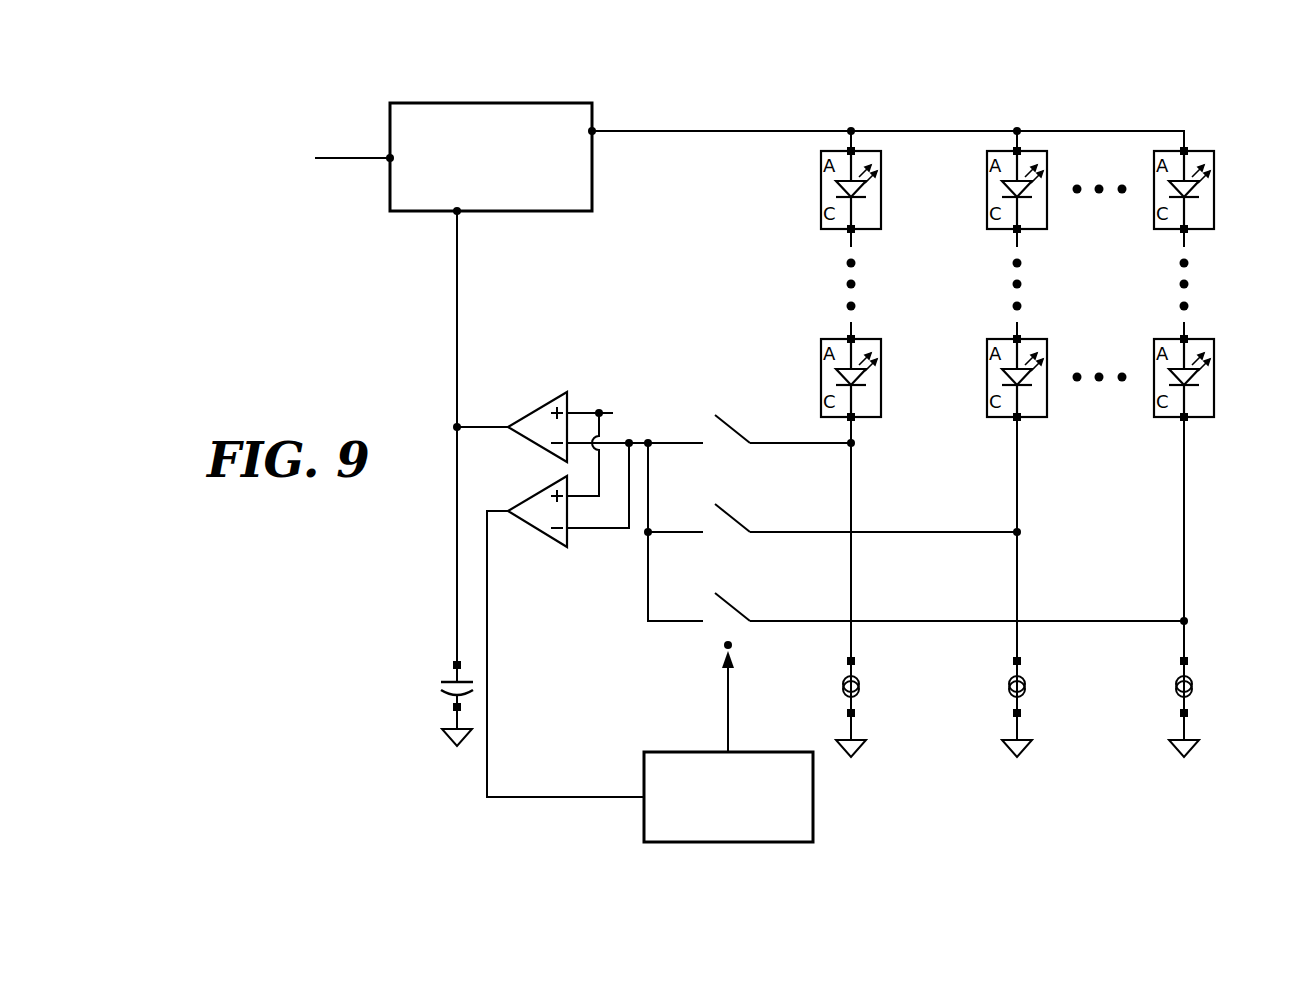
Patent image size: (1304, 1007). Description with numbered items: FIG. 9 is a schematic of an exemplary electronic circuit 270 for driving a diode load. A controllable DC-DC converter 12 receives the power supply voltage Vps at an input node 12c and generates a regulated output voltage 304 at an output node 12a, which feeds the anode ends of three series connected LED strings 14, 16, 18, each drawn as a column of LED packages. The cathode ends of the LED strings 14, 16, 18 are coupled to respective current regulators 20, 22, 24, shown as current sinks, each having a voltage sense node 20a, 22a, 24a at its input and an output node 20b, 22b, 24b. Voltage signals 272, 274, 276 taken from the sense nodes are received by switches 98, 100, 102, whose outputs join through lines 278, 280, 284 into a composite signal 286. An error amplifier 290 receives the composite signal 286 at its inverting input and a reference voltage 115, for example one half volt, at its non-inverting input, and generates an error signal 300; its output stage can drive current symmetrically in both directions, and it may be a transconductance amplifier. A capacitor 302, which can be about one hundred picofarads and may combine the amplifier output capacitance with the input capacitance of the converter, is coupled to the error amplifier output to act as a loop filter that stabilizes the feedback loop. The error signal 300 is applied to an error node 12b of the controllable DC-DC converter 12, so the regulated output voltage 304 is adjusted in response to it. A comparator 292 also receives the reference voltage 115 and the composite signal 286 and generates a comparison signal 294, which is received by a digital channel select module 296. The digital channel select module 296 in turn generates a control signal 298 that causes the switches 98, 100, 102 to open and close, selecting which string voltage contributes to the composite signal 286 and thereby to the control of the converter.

The controllable DC-DC converter 12 is at (581, 204).
The output node 12a is at (595, 129).
The error node 12b is at (460, 214).
The input node 12c is at (389, 160).
The series connected LED string 14 is at (868, 229).
The series connected LED string 16 is at (1034, 229).
The series connected LED string 18 is at (1201, 229).
The current regulator 20 is at (894, 695).
The voltage sense node 20a is at (857, 659).
The output node 20b is at (857, 716).
The current regulator 22 is at (1060, 695).
The voltage sense node 22a is at (1023, 659).
The output node 22b is at (1023, 716).
The current regulator 24 is at (1227, 691).
The voltage sense node 24a is at (1190, 659).
The output node 24b is at (1190, 716).
The switch 98 is at (731, 426).
The switch 100 is at (733, 517).
The switch 102 is at (733, 606).
The reference voltage 115 is at (587, 412).
The electronic circuit 270 is at (795, 84).
The voltage signal 272 is at (817, 446).
The voltage signal 274 is at (935, 530).
The voltage signal 276 is at (1096, 619).
The first switch output line 278 is at (679, 445).
The second switch output line 280 is at (679, 534).
The third switch output line 284 is at (679, 623).
The composite signal 286 is at (634, 440).
The error amplifier 290 is at (526, 415).
The comparator 292 is at (575, 542).
The comparison signal 294 is at (562, 797).
The digital channel select module 296 is at (813, 790).
The control signal 298 is at (729, 712).
The error signal 300 is at (458, 343).
The capacitor 302 is at (440, 688).
The regulated output voltage 304 is at (930, 130).